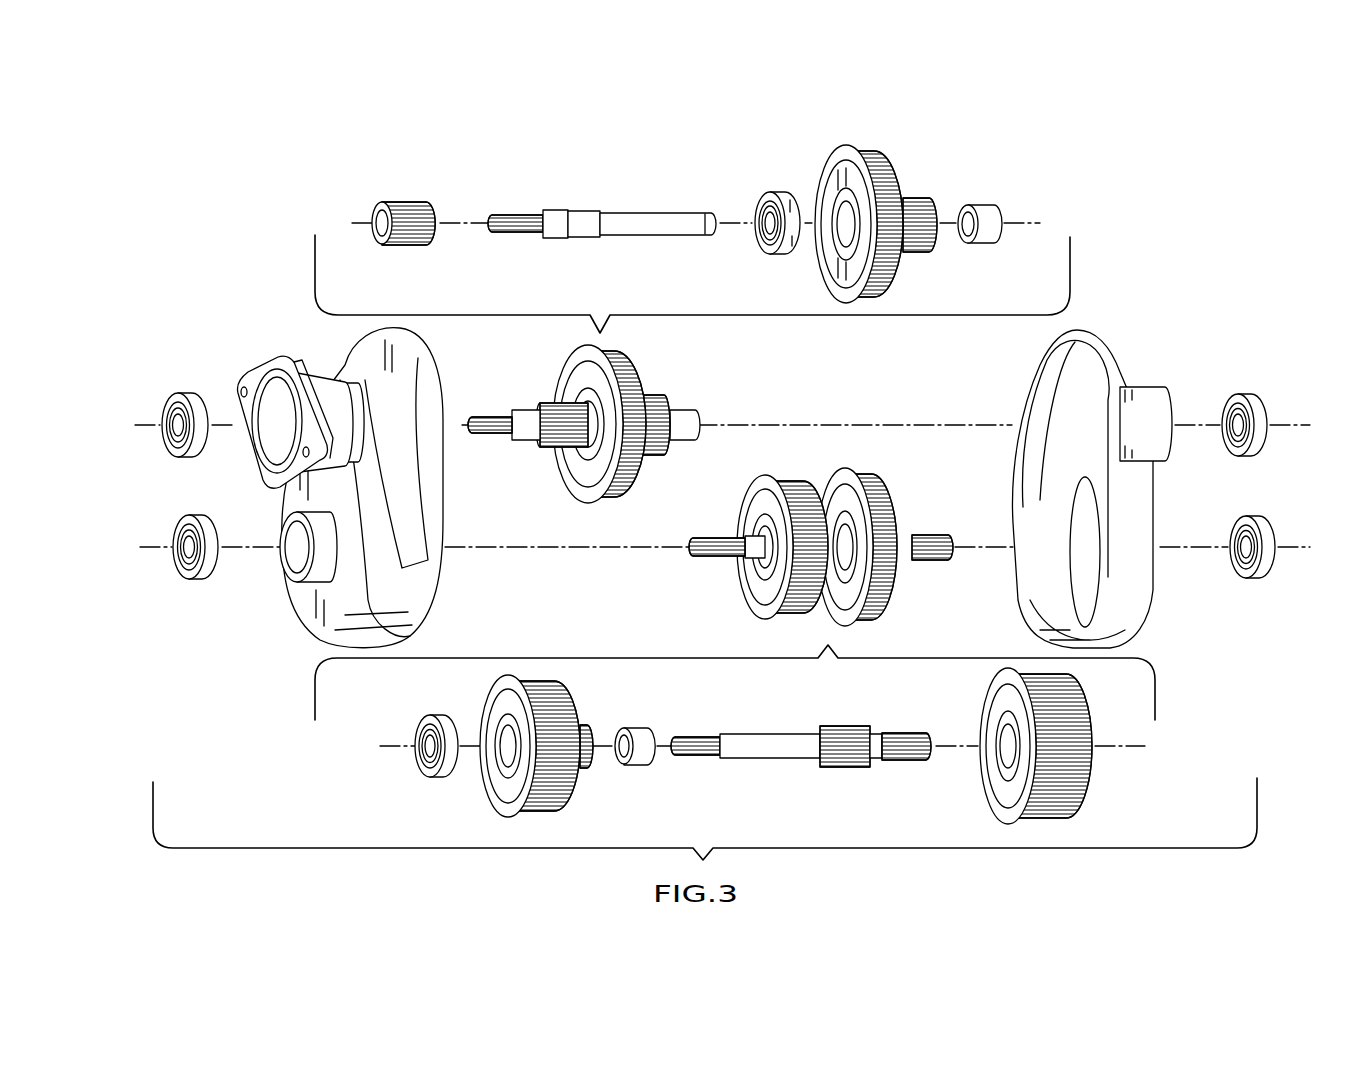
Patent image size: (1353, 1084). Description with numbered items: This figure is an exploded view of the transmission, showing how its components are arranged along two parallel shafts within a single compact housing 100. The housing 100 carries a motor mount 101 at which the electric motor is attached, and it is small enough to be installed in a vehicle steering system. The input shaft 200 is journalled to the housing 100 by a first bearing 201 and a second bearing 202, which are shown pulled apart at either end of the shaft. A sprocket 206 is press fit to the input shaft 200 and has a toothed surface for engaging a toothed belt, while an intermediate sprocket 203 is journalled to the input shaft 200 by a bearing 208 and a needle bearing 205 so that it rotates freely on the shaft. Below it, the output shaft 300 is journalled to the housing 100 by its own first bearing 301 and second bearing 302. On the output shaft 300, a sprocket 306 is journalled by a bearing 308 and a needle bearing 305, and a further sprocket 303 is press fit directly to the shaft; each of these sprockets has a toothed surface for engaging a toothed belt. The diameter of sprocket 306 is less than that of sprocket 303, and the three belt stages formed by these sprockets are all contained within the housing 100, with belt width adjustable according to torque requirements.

The housing 100 is at (293, 626).
The motor mount 101 is at (262, 366).
The input shaft 200 is at (553, 209).
The first bearing 201 is at (1243, 393).
The second bearing 202 is at (182, 393).
The intermediate sprocket 203 is at (893, 166).
The needle bearing 205 is at (990, 203).
The sprocket 206 is at (400, 202).
The bearing 208 is at (771, 260).
The output shaft 300 is at (768, 738).
The first bearing 301 is at (1255, 580).
The second bearing 302 is at (195, 580).
The sprocket 303 is at (992, 700).
The needle bearing 305 is at (633, 768).
The sprocket 306 is at (484, 702).
The bearing 308 is at (432, 778).